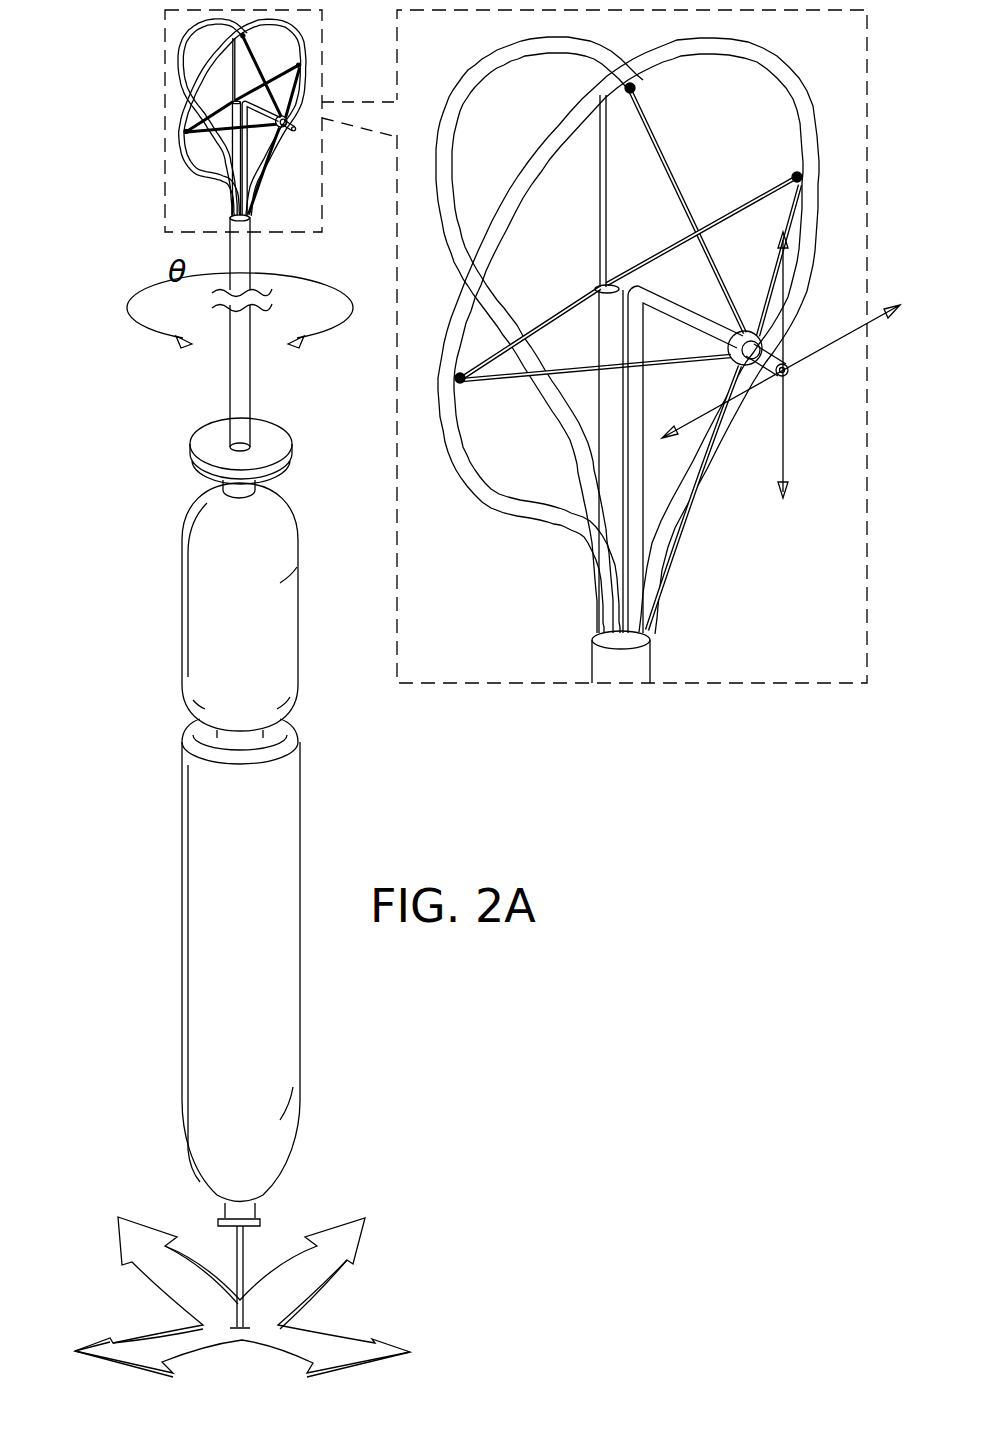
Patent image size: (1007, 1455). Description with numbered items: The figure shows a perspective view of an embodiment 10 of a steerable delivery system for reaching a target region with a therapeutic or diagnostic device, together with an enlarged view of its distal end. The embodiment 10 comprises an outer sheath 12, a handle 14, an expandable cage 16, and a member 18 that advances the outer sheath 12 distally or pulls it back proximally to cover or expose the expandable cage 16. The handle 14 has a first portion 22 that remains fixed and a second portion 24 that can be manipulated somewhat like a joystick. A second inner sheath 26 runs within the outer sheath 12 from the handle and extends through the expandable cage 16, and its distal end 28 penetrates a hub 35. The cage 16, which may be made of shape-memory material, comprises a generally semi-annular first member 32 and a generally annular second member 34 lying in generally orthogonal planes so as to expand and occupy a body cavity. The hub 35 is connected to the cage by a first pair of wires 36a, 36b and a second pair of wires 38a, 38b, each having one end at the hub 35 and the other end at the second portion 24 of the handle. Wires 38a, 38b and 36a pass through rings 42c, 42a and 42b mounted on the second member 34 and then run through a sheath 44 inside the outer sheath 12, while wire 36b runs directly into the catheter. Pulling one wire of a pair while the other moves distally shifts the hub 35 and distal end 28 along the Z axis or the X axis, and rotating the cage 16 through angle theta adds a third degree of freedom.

The embodiment 10 is at (381, 771).
The outer sheath 12 is at (602, 660).
The handle 14 is at (186, 715).
The expandable cage 16 is at (183, 45).
The member 18 is at (195, 448).
The first portion 22 is at (182, 570).
The second portion 24 is at (182, 935).
The second inner sheath 26 is at (686, 312).
The distal end 28 is at (786, 376).
The first member 32 is at (470, 72).
The second member 34 is at (473, 504).
The hub 35 is at (735, 370).
The wire 36a is at (671, 175).
The fourth wire 36b is at (676, 548).
The wire 38a is at (798, 222).
The wire 38b is at (586, 372).
The ring 42a is at (465, 390).
The ring 42b is at (630, 96).
The ring 42c is at (795, 178).
The sheath 44 is at (598, 289).